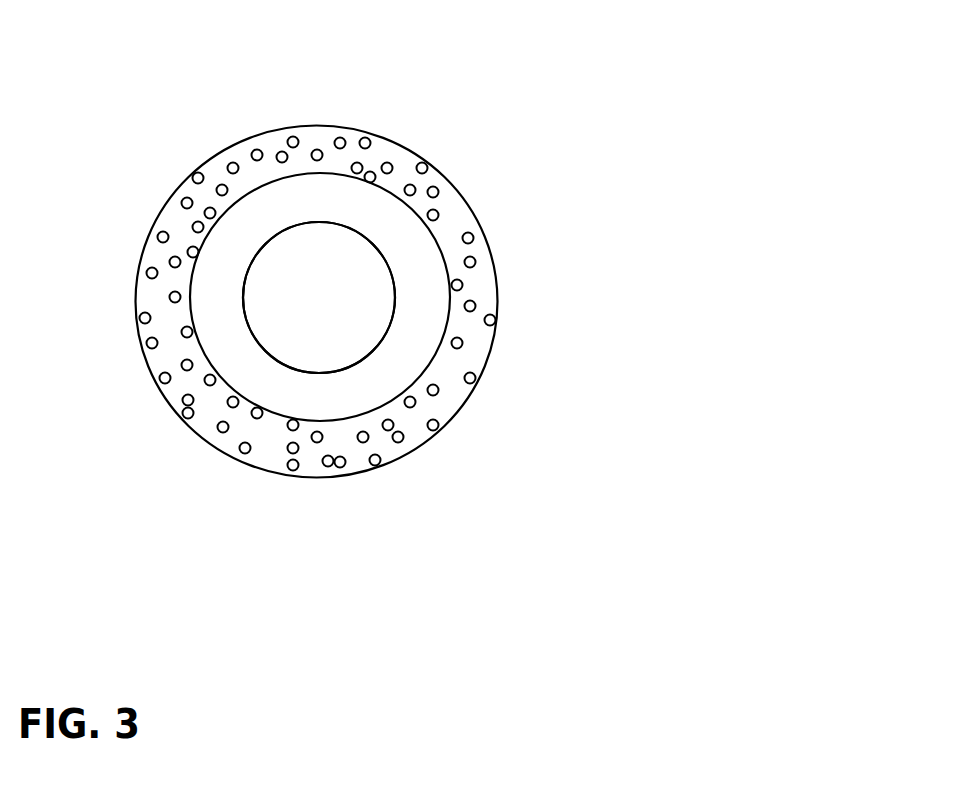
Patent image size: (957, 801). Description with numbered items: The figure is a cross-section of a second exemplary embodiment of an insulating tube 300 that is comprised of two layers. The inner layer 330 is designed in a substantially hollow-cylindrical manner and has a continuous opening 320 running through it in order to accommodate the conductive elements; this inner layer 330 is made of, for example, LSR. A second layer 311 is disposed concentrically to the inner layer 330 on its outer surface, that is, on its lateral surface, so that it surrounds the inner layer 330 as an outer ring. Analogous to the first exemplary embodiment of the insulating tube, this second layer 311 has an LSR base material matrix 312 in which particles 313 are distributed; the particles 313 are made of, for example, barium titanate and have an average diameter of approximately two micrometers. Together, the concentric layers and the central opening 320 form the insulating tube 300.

The insulating tube 300 is at (462, 165).
The second layer 311 is at (481, 225).
The LSR base material matrix 312 is at (488, 293).
The particles 313 is at (230, 167).
The continuous opening 320 is at (260, 302).
The inner layer 330 is at (328, 198).